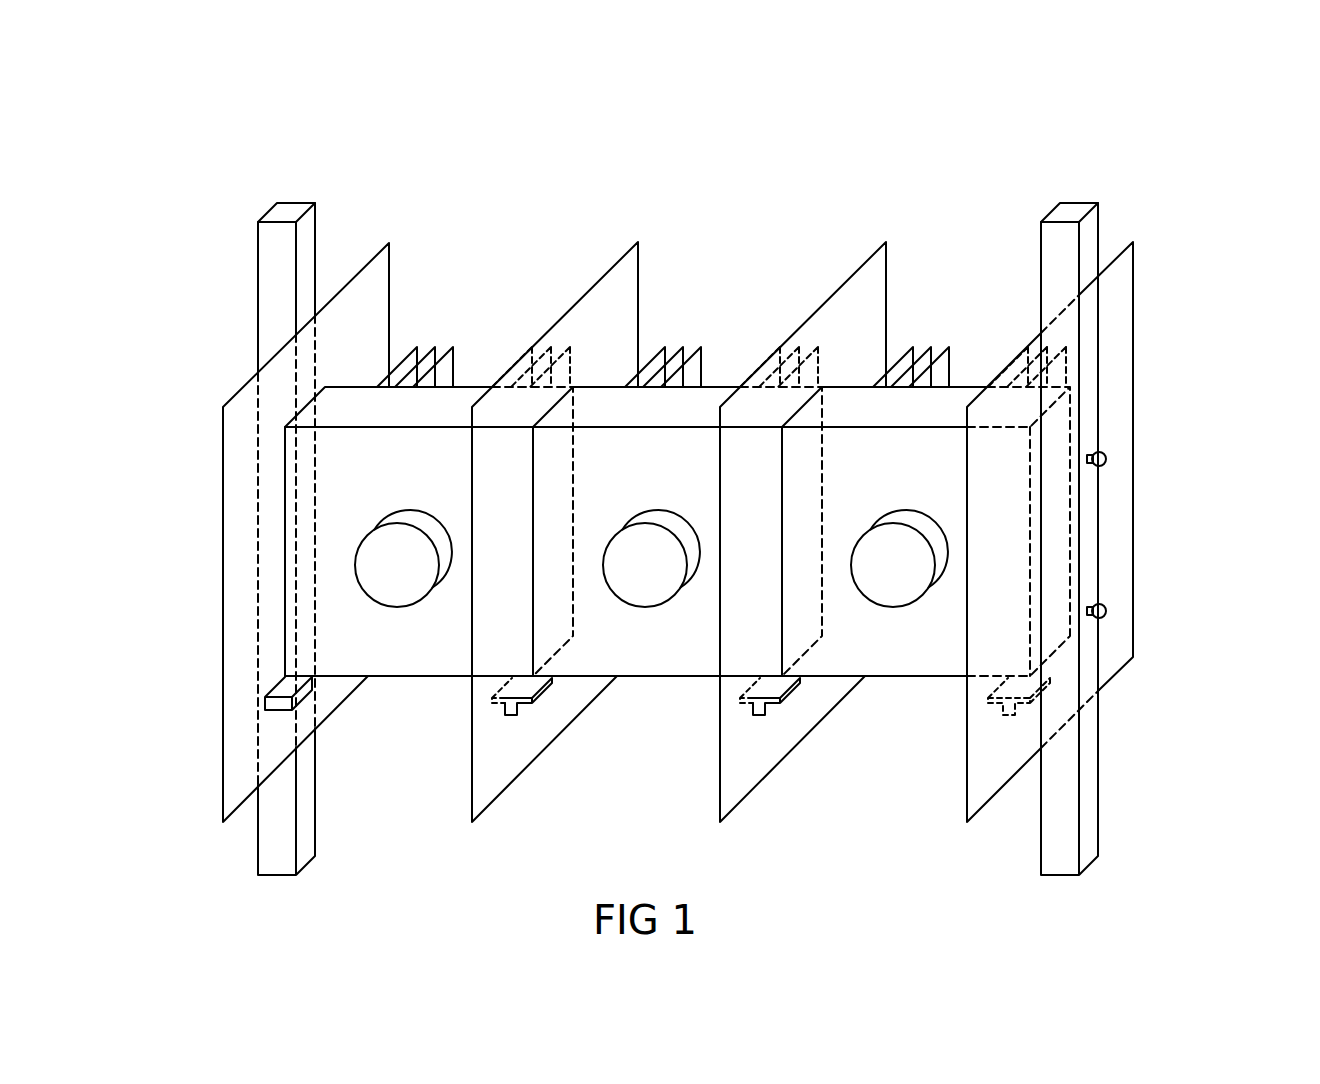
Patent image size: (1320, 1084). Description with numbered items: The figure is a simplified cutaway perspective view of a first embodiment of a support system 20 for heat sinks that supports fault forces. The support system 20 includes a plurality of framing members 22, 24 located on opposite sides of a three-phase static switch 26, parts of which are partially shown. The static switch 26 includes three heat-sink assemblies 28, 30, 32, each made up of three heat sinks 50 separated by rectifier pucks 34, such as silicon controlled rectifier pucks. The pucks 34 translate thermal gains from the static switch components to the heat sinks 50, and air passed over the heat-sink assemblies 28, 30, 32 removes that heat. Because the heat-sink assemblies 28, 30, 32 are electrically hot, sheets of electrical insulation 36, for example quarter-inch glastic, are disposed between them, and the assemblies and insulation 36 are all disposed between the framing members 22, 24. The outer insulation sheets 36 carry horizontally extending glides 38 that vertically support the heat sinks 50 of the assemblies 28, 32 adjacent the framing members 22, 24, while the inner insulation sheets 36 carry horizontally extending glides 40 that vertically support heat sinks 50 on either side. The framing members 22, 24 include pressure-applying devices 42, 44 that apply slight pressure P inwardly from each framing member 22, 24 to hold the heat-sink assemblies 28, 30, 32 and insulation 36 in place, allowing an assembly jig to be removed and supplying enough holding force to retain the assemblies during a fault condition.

The support system 20 is at (1198, 355).
The framing member 22 is at (277, 275).
The framing member 24 is at (1090, 822).
The three-phase static switch 26 is at (758, 152).
The heat-sink assembly 28 is at (462, 298).
The heat-sink assembly 30 is at (697, 294).
The heat-sink assembly 32 is at (944, 294).
The rectifier puck 34 is at (397, 563).
The sheet of electrical insulation 36 is at (240, 767).
The glide 38 is at (280, 710).
The glide 40 is at (527, 712).
The pressure-applying device 42 is at (1101, 466).
The pressure-applying device 44 is at (1101, 618).
The heat sink 50 is at (433, 663).
The pressure P is at (1120, 459).